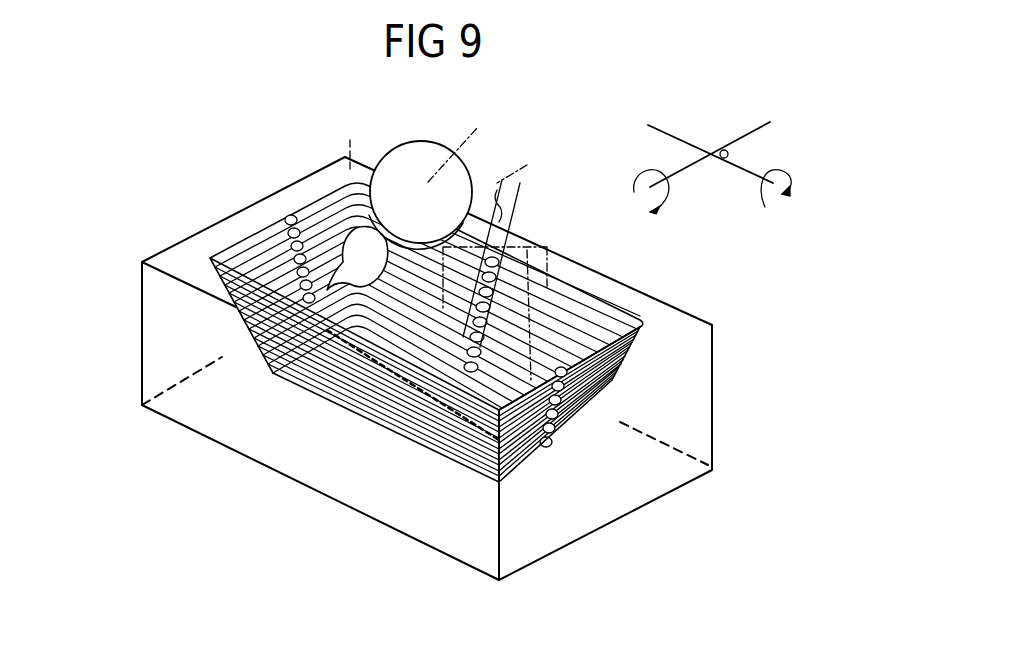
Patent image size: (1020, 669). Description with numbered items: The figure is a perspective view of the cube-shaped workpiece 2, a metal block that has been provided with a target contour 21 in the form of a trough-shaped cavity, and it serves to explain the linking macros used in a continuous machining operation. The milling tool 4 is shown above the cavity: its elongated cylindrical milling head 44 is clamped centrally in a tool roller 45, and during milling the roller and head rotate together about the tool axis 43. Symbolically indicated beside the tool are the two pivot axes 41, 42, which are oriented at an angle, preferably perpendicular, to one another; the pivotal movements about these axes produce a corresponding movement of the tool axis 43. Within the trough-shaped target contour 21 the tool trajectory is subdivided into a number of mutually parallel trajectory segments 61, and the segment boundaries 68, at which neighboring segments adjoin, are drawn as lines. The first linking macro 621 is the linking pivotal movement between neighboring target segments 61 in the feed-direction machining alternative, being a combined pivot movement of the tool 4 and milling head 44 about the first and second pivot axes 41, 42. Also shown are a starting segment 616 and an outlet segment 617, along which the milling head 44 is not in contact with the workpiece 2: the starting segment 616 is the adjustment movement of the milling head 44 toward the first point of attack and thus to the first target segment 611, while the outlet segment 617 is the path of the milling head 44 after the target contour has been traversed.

The workpiece 2 is at (104, 314).
The milling tool 4 is at (452, 298).
The target contour 21 is at (330, 222).
The first pivot axis 41 is at (744, 168).
The second pivot axis 42 is at (735, 146).
The tool axis 43 is at (486, 186).
The milling head 44 is at (449, 483).
The tool roller 45 is at (429, 150).
The trajectory segment 61 is at (649, 300).
The segment boundary 68 is at (247, 198).
The first target segment 611 is at (613, 300).
The starting segment 616 is at (520, 207).
The outlet segment 617 is at (497, 192).
The first linking macro 621 is at (283, 217).